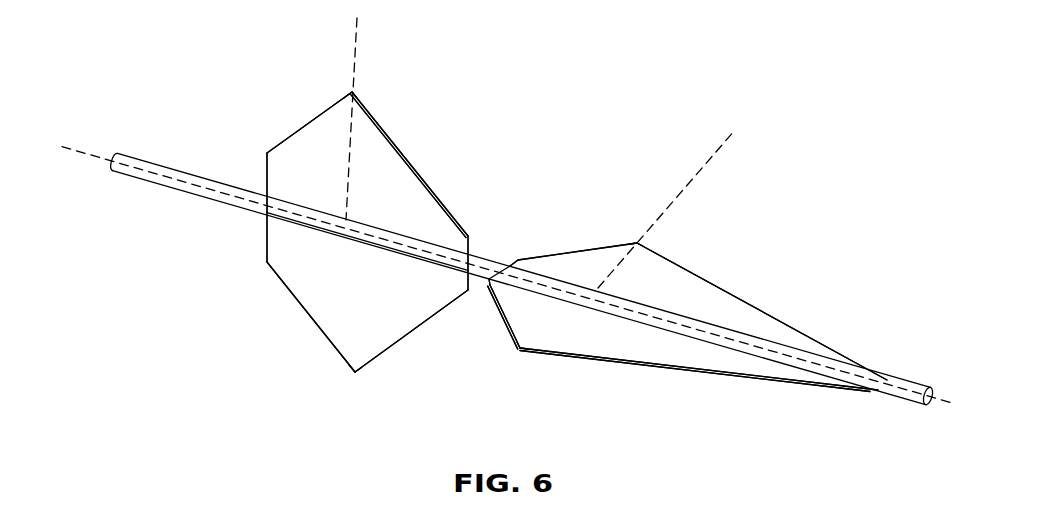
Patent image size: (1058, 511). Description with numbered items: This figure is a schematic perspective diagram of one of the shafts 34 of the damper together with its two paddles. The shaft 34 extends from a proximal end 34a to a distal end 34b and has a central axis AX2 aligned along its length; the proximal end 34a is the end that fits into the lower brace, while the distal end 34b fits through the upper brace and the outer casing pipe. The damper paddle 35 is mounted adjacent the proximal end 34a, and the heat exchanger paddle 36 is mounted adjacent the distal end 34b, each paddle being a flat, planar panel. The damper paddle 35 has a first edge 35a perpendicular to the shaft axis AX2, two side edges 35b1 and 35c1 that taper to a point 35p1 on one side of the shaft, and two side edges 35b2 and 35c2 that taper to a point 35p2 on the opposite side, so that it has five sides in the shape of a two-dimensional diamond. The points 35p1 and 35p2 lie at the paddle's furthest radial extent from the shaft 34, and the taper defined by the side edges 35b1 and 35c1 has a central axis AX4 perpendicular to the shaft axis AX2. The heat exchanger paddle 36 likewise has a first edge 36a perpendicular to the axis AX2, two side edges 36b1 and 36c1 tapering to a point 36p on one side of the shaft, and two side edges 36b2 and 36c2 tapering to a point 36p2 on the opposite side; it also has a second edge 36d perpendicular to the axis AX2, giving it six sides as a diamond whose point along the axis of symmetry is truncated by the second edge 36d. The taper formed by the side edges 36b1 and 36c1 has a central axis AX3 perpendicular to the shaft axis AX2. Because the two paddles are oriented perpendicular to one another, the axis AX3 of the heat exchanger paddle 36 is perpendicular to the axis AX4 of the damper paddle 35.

The shaft 34 is at (173, 189).
The proximal end 34a is at (907, 380).
The distal end 34b is at (140, 158).
The damper paddle 35 is at (689, 298).
The first edge 35a is at (492, 284).
The side edge 35b1 is at (592, 249).
The side edge 35b2 is at (505, 322).
The point 35p1 is at (639, 243).
The point 35p2 is at (521, 349).
The side edge 35c1 is at (712, 284).
The side edge 35c2 is at (670, 366).
The heat exchanger paddle 36 is at (393, 204).
The first edge 36a is at (265, 180).
The side edge 36b1 is at (310, 124).
The side edge 36b2 is at (307, 312).
The first tip of first fin 36p is at (354, 92).
The point 36p2 is at (355, 372).
The side edge 36c1 is at (403, 154).
The side edge 36c2 is at (413, 332).
The second edge 36d is at (469, 240).
The central axis AX2 is at (84, 157).
The central axis AX3 is at (355, 50).
The central axis AX4 is at (717, 150).